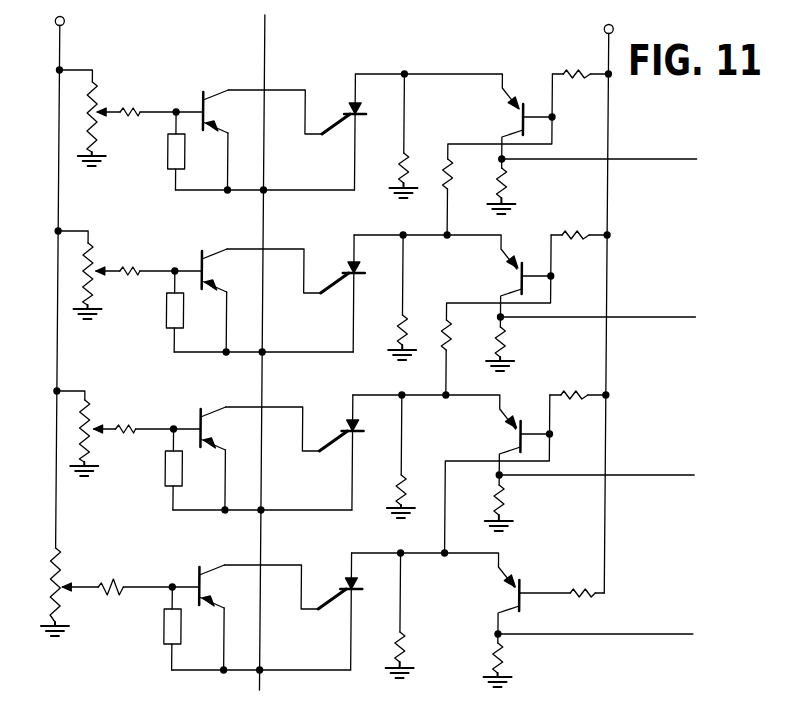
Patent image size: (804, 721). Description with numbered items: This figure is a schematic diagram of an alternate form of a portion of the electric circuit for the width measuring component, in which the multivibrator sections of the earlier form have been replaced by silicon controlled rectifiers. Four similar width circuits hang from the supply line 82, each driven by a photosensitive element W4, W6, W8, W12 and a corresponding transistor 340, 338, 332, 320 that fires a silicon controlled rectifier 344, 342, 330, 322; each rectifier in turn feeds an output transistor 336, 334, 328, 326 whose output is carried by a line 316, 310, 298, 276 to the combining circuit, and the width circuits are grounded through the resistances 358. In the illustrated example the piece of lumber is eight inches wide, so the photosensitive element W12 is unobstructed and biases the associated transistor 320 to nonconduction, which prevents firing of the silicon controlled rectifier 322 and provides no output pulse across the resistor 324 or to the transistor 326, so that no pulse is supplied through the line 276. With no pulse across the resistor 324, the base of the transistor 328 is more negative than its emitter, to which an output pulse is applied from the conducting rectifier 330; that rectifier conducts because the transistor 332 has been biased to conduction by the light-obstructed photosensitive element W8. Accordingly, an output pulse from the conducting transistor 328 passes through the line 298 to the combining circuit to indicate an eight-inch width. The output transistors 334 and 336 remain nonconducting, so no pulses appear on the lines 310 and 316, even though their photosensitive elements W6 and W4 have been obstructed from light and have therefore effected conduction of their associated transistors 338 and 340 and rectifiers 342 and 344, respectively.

The line 82 is at (268, 33).
The transistor 340 is at (198, 101).
The transistor 338 is at (199, 258).
The transistor 332 is at (199, 418).
The transistor 320 is at (200, 580).
The photosensitive element W4 is at (169, 152).
The photosensitive element W6 is at (169, 311).
The photosensitive element W8 is at (169, 472).
The photosensitive element W12 is at (168, 637).
The silicon controlled rectifier 344 is at (361, 118).
The silicon controlled rectifier 342 is at (360, 278).
The silicon controlled rectifier 330 is at (362, 433).
The silicon controlled rectifier 322 is at (362, 595).
The resistor 324 is at (412, 647).
The output transistor 336 is at (534, 88).
The output transistor 334 is at (539, 242).
The transistor 328 is at (536, 408).
The transistor 326 is at (529, 582).
The resistance 358 is at (506, 179).
The line 316 is at (671, 160).
The line 310 is at (664, 315).
The line 298 is at (679, 477).
The line 276 is at (665, 633).